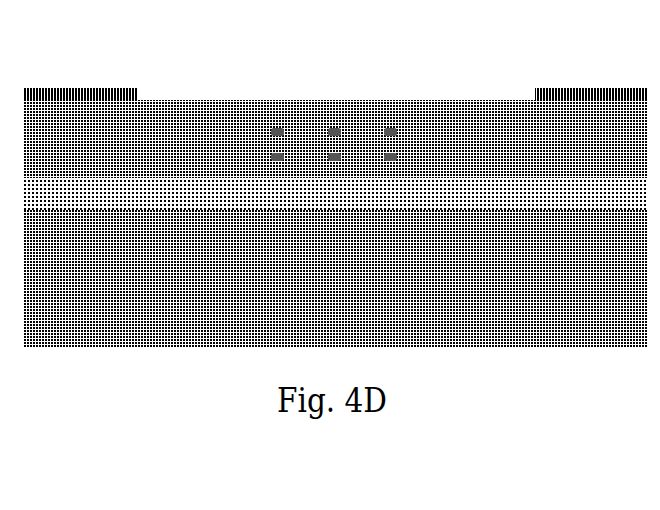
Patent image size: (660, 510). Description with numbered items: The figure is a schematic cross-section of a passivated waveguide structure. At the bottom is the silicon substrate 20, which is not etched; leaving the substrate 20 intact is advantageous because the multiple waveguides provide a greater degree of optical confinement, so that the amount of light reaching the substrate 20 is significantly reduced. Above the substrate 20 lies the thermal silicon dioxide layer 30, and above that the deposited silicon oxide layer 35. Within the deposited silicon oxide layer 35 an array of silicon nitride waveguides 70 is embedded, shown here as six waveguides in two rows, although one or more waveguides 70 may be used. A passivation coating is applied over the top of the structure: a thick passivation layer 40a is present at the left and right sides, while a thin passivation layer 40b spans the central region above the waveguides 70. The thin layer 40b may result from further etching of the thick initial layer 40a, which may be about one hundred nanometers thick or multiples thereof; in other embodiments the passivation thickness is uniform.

The substrate 20 is at (592, 320).
The thermal SiO2 layer 30 is at (358, 206).
The deposited silicon oxide layer 35 is at (123, 150).
The thick passivation layer 40a is at (93, 93).
The thin passivation layer 40b is at (375, 100).
The silicon nitride waveguides 70 is at (277, 137).